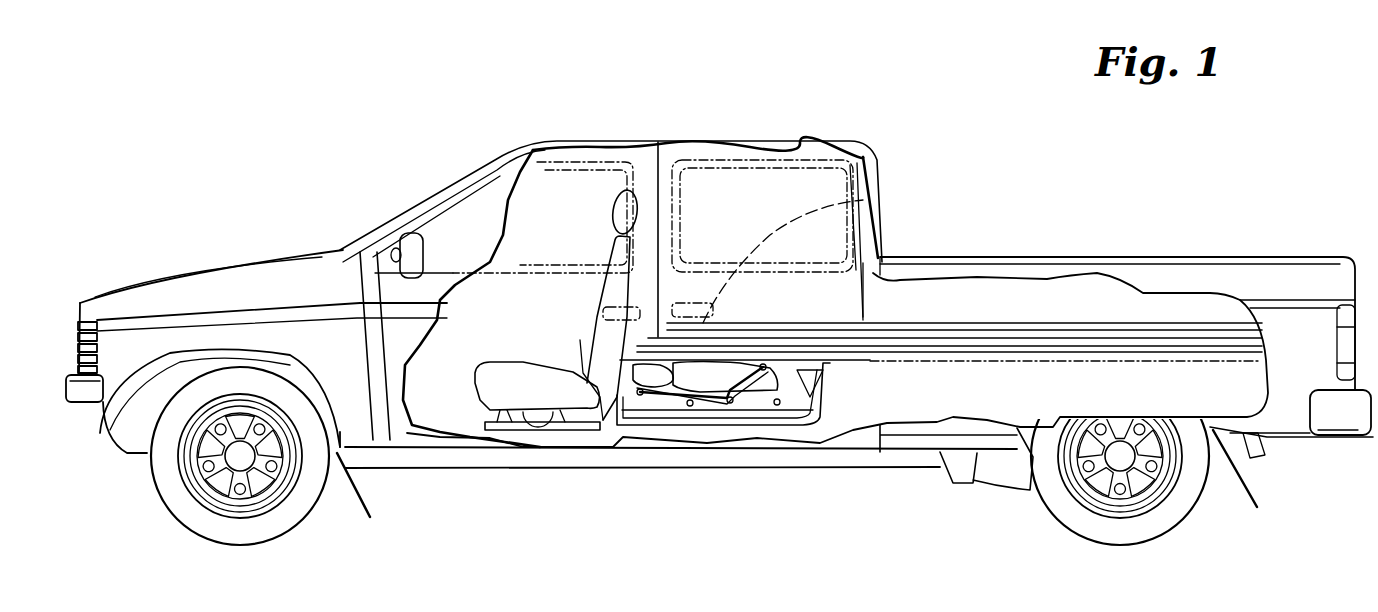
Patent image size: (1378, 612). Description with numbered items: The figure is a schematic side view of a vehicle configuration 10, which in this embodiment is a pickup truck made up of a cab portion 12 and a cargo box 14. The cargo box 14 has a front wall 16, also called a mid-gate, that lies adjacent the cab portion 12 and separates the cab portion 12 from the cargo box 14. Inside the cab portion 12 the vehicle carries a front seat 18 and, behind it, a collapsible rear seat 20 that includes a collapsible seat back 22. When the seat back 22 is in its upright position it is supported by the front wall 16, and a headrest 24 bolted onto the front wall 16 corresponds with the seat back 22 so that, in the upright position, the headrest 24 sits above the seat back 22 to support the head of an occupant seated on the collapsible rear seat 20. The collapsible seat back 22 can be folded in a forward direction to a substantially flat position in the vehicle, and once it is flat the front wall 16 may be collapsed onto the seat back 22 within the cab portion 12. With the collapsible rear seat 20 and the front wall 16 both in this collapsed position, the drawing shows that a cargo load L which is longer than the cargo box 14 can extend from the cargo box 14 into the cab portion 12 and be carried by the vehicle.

The vehicle configuration 10 is at (479, 512).
The cab portion 12 is at (602, 142).
The cargo box 14 is at (1008, 258).
The front wall 16 is at (857, 227).
The front seat 18 is at (613, 262).
The collapsible rear seat 20 is at (663, 412).
The collapsible seat back 22 is at (710, 385).
The headrest 24 is at (622, 432).
The cargo load L is at (1128, 318).